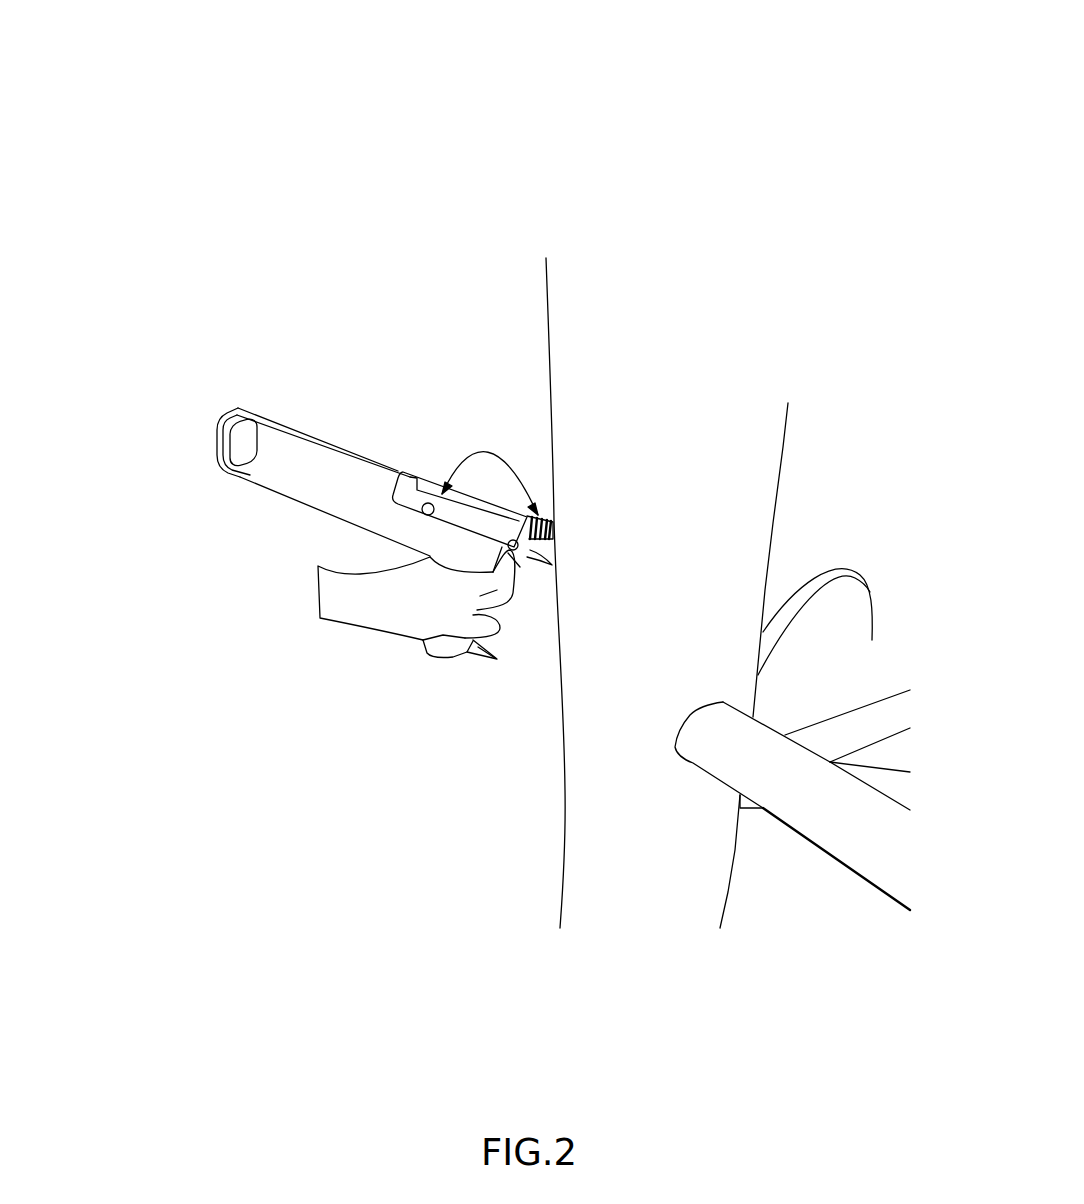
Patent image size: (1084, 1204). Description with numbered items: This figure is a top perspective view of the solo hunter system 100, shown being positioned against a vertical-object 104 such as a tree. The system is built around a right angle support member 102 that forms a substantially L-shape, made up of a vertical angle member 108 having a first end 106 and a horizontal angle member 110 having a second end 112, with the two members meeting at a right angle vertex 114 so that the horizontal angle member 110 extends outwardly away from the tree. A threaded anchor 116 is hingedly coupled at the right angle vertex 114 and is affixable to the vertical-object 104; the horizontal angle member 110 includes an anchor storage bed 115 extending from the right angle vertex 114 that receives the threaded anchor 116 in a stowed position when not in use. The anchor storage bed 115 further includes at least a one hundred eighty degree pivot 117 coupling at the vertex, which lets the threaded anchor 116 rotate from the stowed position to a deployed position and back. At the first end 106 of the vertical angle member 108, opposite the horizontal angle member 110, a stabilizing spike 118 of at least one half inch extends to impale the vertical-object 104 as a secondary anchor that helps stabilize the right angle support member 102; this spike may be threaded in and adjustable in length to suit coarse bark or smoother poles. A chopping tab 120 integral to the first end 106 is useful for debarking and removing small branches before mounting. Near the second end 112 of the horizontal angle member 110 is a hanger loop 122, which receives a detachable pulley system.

The solo hunter system 100 is at (582, 98).
The right angle support member 102 is at (347, 434).
The vertical-object 104 is at (672, 490).
The first end 106 is at (423, 640).
The vertical angle member 108 is at (514, 553).
The horizontal angle member 110 is at (288, 472).
The second end 112 is at (215, 439).
The right angle vertex 114 is at (552, 560).
The anchor storage bed 115 is at (429, 483).
The threaded anchor 116 is at (535, 508).
The pivot coupling 117 is at (510, 560).
The stabilizing spike 118 is at (478, 660).
The chopping tab 120 is at (437, 657).
The hanger loop 122 is at (239, 447).